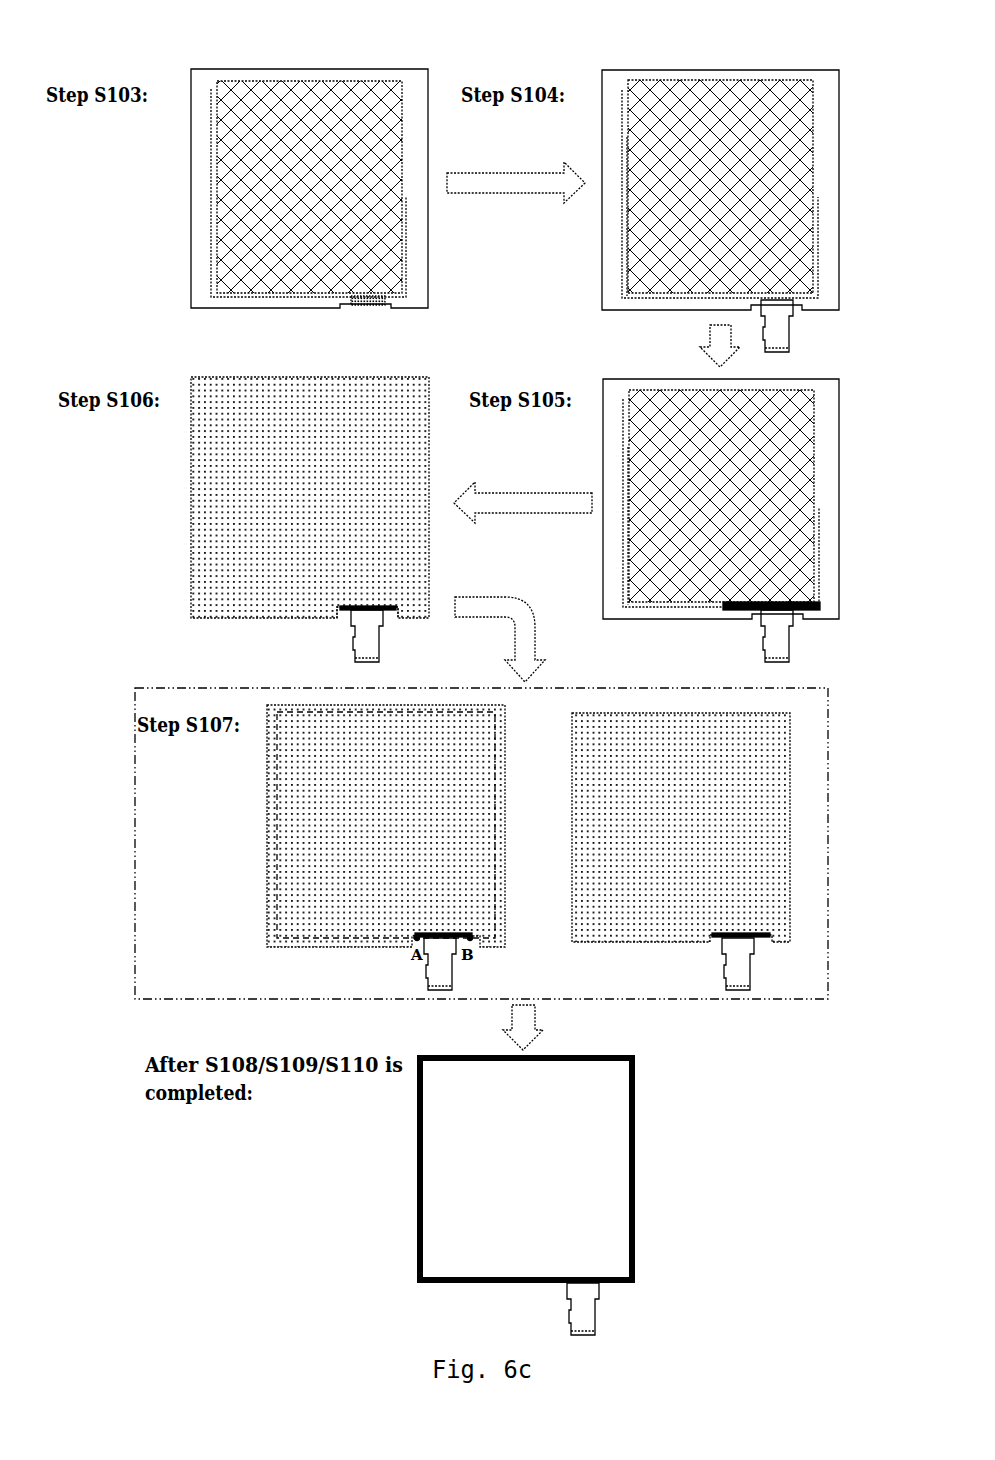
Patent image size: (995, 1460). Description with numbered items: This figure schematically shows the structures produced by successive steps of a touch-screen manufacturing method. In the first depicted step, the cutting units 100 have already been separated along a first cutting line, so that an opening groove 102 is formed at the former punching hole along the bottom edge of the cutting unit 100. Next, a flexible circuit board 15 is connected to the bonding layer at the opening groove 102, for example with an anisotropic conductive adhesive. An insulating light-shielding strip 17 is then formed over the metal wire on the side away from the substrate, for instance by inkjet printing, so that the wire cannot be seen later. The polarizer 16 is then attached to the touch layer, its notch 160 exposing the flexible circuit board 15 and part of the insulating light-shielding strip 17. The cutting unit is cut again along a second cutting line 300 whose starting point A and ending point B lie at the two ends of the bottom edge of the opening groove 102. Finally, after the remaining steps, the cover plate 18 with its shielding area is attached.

The cutting unit 100 is at (288, 69).
The opening groove 102 is at (371, 309).
The flexible circuit board 15 is at (797, 323).
The polarizer 16 is at (310, 497).
The notch 160 is at (340, 613).
The insulating light-shielding strip 17 is at (821, 611).
The second cutting line 300 is at (274, 781).
The cover plate 18 is at (417, 1162).